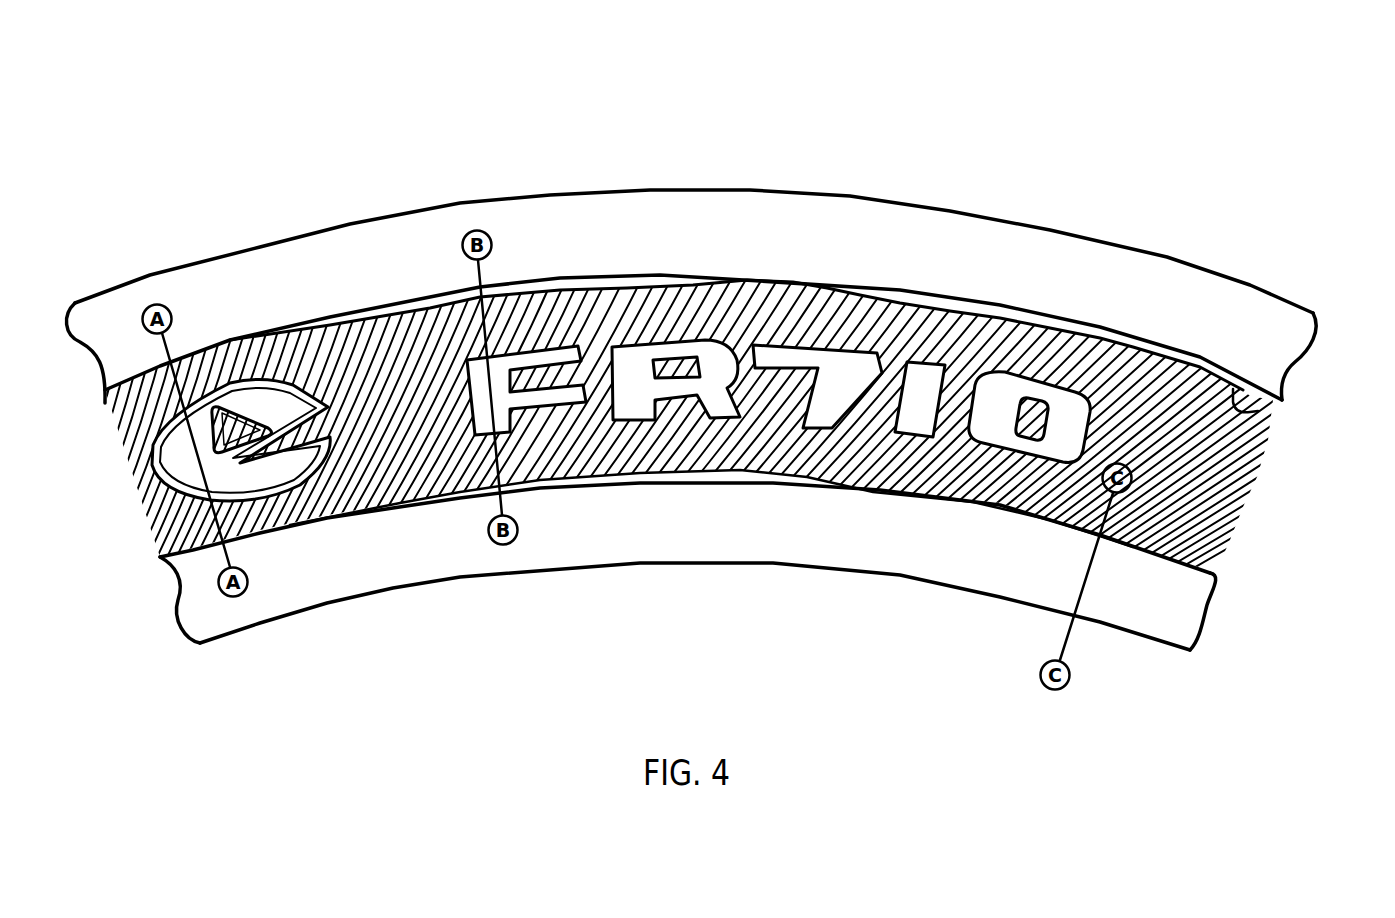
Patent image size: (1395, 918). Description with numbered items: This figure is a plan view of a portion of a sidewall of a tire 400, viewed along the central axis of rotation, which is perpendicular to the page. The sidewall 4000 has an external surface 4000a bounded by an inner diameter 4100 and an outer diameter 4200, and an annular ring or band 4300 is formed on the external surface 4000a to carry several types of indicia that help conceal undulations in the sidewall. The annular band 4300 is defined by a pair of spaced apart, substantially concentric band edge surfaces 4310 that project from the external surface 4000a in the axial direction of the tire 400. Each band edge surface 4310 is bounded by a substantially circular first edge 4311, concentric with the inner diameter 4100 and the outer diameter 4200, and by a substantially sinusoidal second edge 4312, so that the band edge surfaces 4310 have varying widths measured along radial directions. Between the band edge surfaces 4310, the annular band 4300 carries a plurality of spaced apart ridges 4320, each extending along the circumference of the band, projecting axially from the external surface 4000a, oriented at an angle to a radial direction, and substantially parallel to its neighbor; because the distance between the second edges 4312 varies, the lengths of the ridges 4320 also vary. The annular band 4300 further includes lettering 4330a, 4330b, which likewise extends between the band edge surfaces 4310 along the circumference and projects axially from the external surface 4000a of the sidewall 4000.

The tire 400 is at (855, 133).
The sidewall 4000 is at (869, 220).
The external surface 4000a is at (727, 245).
The outer diameter 4200 is at (1063, 230).
The inner diameter 4100 is at (937, 586).
The annular band 4300 is at (1256, 371).
The band edge surfaces 4310 is at (1227, 377).
The first edge 4311 is at (1180, 348).
The second edge 4312 is at (1233, 410).
The ridges 4320 is at (1220, 433).
The lettering 4330a is at (183, 470).
The lettering 4330b is at (560, 393).